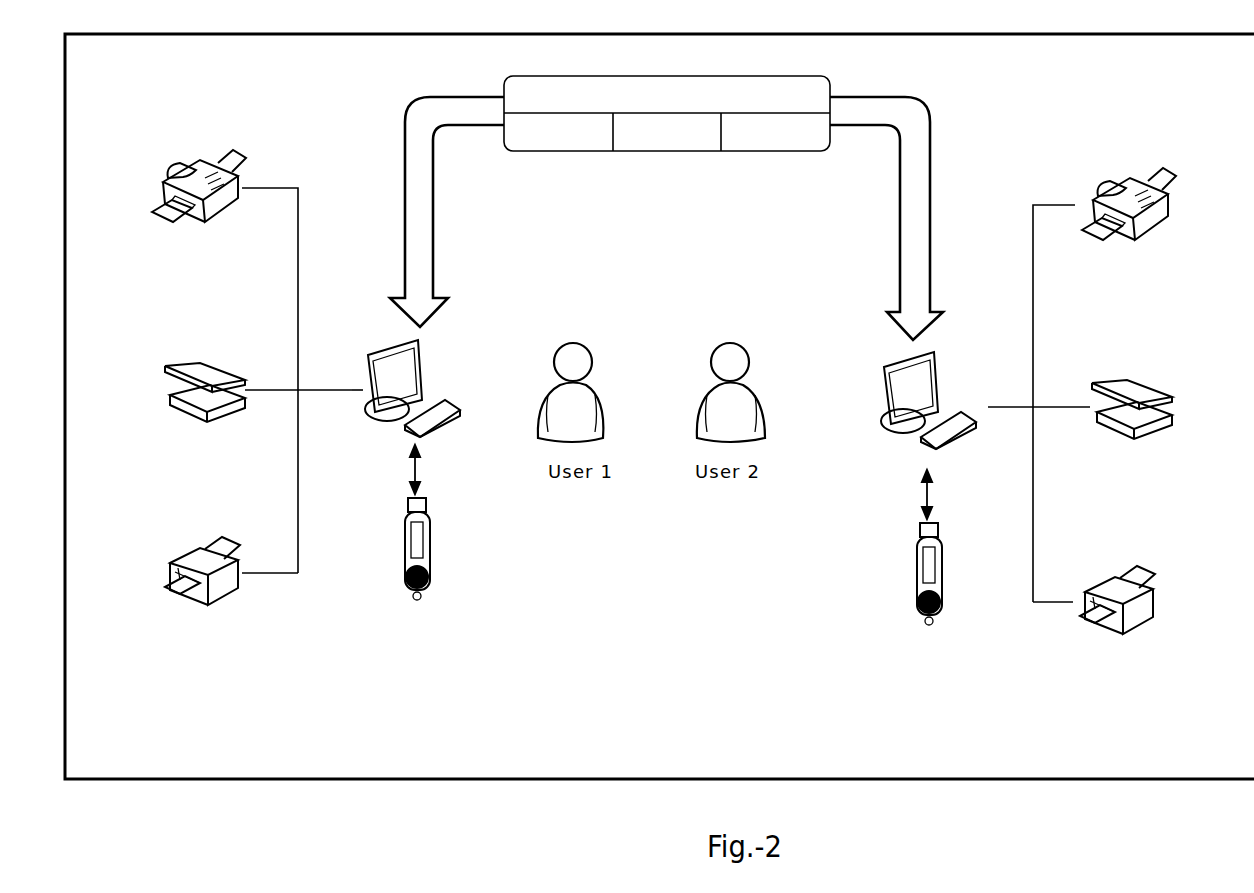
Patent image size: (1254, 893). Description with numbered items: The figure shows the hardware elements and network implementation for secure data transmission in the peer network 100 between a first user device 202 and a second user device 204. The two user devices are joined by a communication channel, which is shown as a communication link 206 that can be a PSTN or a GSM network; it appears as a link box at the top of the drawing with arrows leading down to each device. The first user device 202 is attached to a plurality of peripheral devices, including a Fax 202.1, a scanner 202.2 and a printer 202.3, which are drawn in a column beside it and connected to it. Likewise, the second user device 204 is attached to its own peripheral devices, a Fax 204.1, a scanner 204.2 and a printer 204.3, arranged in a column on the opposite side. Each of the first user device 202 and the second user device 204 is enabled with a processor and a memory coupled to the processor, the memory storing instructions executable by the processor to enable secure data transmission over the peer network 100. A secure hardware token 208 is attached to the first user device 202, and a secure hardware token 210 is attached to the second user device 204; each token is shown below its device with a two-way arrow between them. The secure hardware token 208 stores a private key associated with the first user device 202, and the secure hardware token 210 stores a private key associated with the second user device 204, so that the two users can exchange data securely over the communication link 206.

The peer network 100 is at (530, 781).
The first user device 202 is at (425, 345).
The Fax 202.1 is at (183, 160).
The scanner 202.2 is at (180, 367).
The printer 202.3 is at (193, 553).
The second user device 204 is at (893, 372).
The Fax 204.1 is at (1152, 172).
The scanner 204.2 is at (1155, 387).
The printer 204.3 is at (1152, 572).
The communication link 206 is at (613, 150).
The secure hardware token 208 is at (430, 533).
The secure hardware token 210 is at (905, 545).